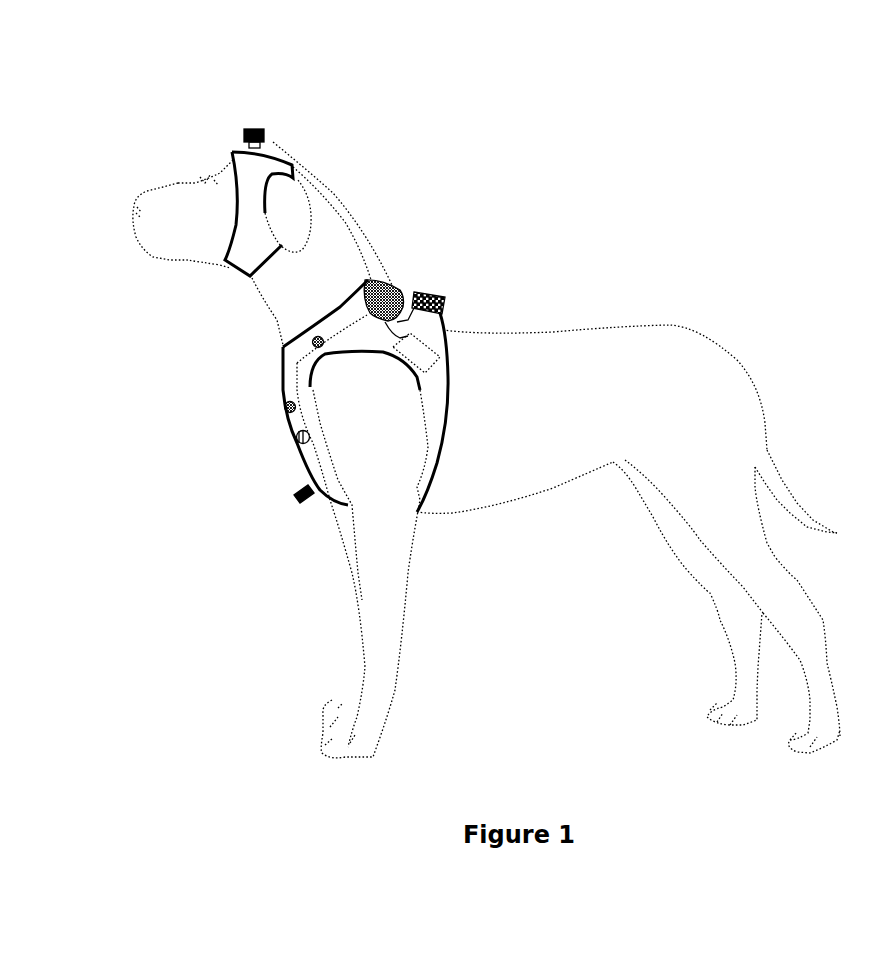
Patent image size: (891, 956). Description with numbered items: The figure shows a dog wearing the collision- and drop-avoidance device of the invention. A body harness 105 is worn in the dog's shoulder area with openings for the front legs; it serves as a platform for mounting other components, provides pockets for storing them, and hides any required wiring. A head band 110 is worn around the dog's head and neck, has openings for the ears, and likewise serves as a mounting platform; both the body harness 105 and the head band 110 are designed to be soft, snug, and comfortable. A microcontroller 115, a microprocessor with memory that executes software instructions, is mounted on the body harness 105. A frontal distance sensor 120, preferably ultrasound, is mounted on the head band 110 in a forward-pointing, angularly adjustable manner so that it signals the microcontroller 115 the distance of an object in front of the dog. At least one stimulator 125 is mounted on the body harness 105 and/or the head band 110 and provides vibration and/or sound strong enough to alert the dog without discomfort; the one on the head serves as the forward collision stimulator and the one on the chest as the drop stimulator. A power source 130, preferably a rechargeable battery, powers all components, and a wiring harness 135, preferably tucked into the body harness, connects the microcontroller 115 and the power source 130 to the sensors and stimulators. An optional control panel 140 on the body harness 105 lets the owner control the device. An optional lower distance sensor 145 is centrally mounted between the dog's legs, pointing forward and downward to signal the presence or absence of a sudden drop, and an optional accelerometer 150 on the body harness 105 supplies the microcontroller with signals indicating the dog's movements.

The body harness 105 is at (458, 377).
The head band 110 is at (224, 273).
The microcontroller 115 is at (396, 281).
The frontal distance sensor 120 is at (243, 118).
The stimulator 125 is at (348, 318).
The power source 130 is at (430, 338).
The wiring harness 135 is at (349, 317).
The control panel 140 is at (444, 291).
The lower distance sensor 145 is at (292, 501).
The accelerometer 150 is at (286, 440).